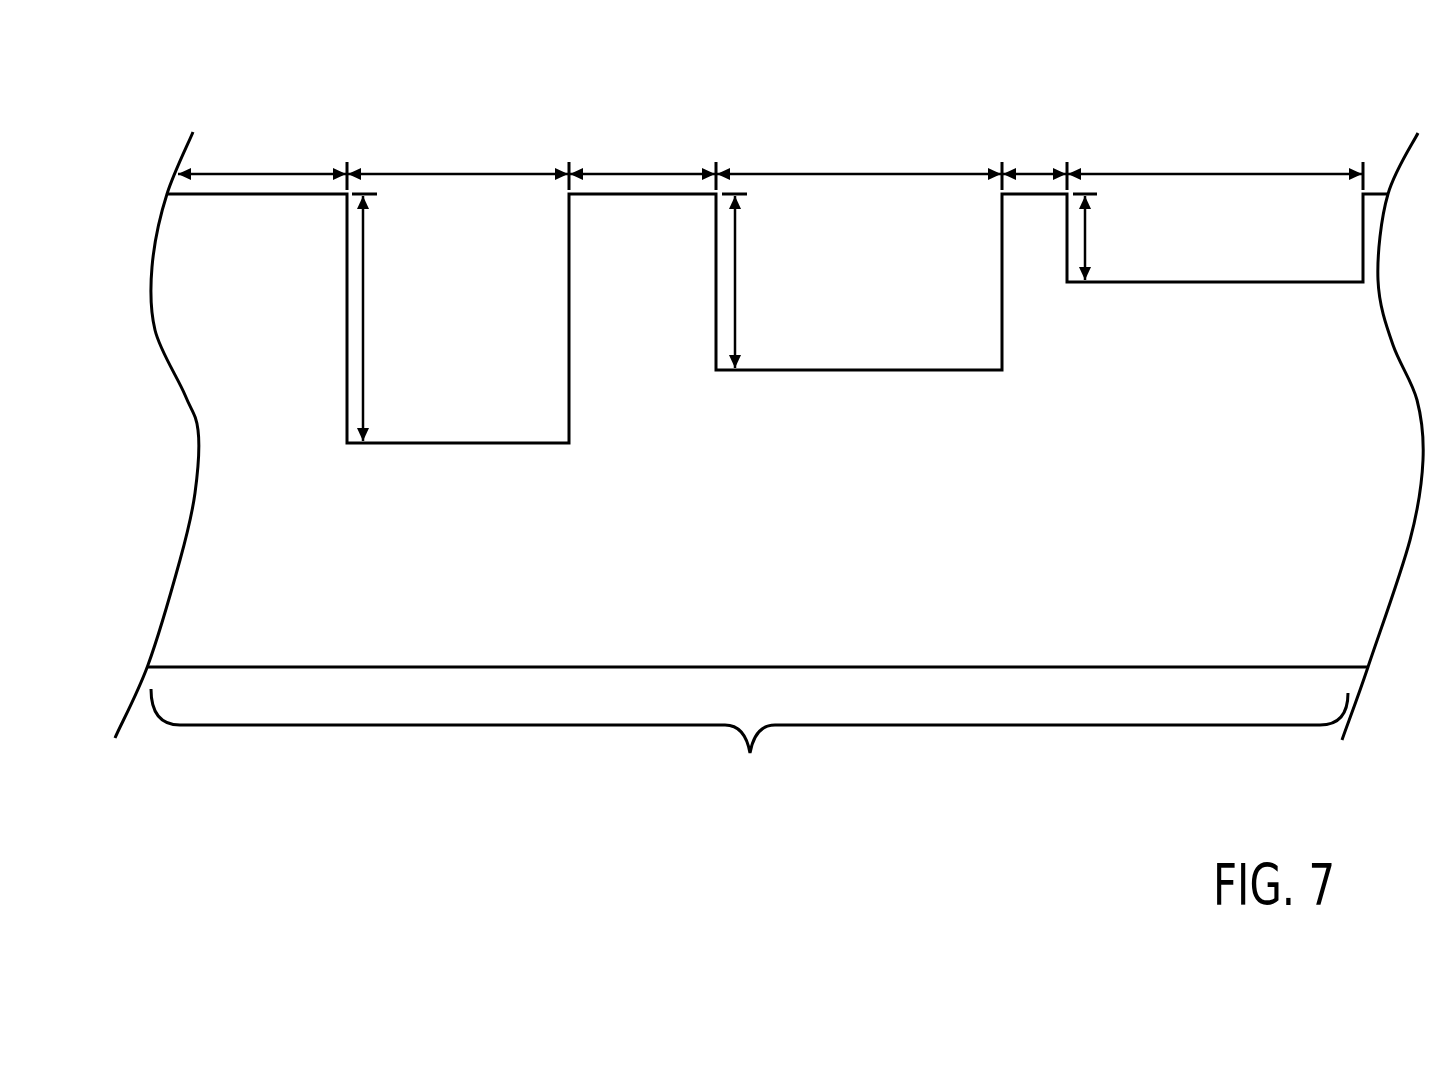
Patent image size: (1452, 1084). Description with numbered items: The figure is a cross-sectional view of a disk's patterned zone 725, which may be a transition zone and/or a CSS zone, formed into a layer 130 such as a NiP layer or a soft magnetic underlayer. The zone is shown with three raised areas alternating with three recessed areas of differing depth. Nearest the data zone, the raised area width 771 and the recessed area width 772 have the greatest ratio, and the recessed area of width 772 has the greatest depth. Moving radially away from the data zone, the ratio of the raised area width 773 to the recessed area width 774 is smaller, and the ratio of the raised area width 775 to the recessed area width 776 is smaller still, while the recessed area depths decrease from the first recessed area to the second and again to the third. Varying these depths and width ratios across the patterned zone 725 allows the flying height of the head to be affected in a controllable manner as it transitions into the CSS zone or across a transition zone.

The layer 130 is at (1147, 614).
The raised area width 771 is at (257, 172).
The recessed area width 772 is at (457, 171).
The raised area width 773 is at (635, 171).
The recessed area width 774 is at (859, 172).
The raised area width 775 is at (1028, 171).
The recessed area width 776 is at (1182, 172).
The patterned zone 725 is at (749, 772).